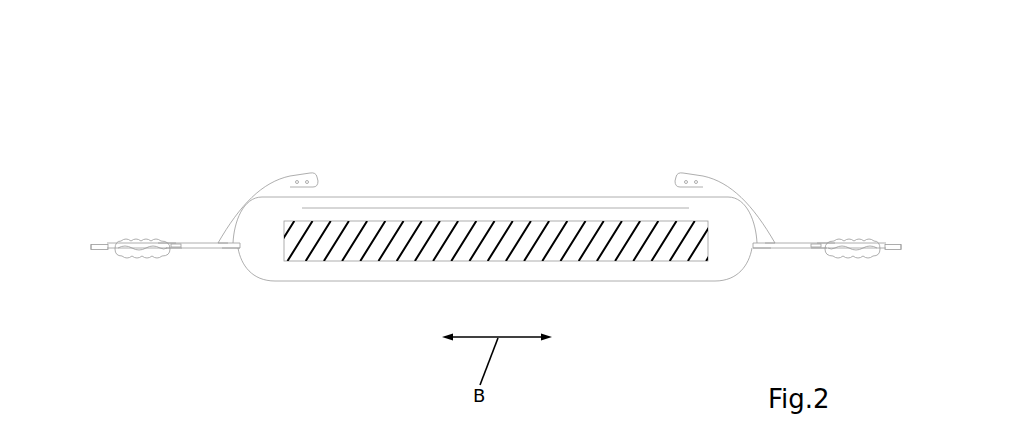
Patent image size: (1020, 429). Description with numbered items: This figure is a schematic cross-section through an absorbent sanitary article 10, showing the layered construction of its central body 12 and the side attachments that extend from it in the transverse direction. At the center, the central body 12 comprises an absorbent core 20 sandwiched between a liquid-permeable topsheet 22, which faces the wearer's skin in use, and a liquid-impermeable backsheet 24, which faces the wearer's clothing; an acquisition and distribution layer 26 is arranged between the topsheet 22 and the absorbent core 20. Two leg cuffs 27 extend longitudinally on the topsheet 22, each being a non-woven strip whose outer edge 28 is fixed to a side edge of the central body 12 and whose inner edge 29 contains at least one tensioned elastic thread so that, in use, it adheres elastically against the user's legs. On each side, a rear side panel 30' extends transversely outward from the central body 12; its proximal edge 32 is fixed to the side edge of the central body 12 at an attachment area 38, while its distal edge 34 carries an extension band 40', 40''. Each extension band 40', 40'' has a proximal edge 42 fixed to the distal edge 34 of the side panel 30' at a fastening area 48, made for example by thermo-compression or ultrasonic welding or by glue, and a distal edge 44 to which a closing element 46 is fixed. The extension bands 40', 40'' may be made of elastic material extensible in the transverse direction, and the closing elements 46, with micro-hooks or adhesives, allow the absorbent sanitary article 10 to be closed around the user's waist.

The absorbent sanitary article 10 is at (753, 87).
The central body 12 is at (627, 128).
The absorbent core 20 is at (483, 250).
The liquid-permeable topsheet 22 is at (450, 197).
The liquid-impermeable backsheet 24 is at (390, 283).
The acquisition and distribution layer 26 is at (512, 208).
The leg cuff 27 is at (256, 193).
The outer edge 28 is at (225, 238).
The inner edge 29 is at (318, 175).
The first rear side panel 30' is at (496, 287).
The proximal edge 32 is at (240, 250).
The distal edge 34 is at (170, 243).
The attachment area 38 is at (225, 245).
The first extension band 40' is at (142, 220).
The second extension band 40'' is at (867, 222).
The proximal edge 42 is at (172, 247).
The distal edge 44 is at (107, 250).
The closing element 46 is at (101, 245).
The fastening area 48 is at (173, 245).